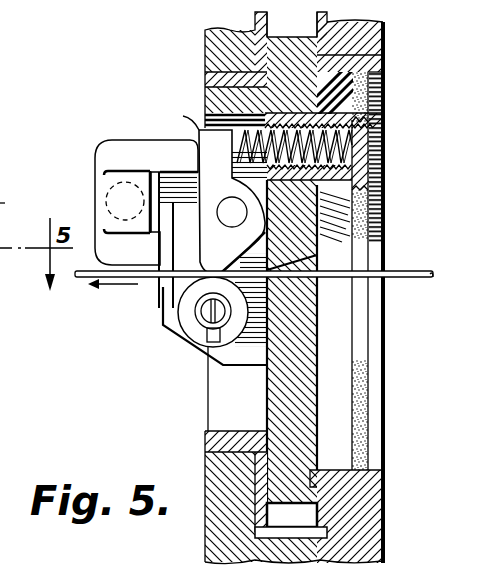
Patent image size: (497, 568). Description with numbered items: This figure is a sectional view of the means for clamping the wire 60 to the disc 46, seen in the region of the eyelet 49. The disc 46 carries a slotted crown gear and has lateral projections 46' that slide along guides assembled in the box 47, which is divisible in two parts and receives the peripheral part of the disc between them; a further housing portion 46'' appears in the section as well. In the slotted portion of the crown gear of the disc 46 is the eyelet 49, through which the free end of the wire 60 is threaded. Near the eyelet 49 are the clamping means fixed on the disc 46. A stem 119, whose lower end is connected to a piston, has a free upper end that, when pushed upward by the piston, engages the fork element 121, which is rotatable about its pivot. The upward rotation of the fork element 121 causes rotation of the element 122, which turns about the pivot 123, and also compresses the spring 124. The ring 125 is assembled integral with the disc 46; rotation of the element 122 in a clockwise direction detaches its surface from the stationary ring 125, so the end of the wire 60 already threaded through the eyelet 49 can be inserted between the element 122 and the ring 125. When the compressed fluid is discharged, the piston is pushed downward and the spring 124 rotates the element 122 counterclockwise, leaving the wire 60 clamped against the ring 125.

The disc 46 is at (312, 287).
The lateral projection 46' is at (211, 452).
The housing packing column 46'' is at (384, 271).
The box 47 is at (205, 553).
The eyelet 49 is at (317, 268).
The wire 60 is at (409, 278).
The stem 119 is at (96, 190).
The fork element 121 is at (143, 147).
The element 122 is at (197, 138).
The pivot 123 is at (228, 217).
The spring 124 is at (383, 151).
The ring 125 is at (190, 321).